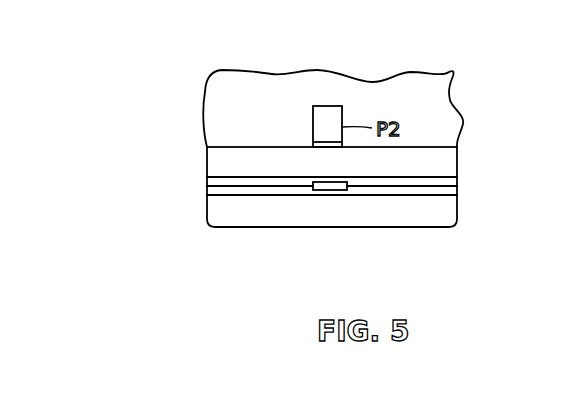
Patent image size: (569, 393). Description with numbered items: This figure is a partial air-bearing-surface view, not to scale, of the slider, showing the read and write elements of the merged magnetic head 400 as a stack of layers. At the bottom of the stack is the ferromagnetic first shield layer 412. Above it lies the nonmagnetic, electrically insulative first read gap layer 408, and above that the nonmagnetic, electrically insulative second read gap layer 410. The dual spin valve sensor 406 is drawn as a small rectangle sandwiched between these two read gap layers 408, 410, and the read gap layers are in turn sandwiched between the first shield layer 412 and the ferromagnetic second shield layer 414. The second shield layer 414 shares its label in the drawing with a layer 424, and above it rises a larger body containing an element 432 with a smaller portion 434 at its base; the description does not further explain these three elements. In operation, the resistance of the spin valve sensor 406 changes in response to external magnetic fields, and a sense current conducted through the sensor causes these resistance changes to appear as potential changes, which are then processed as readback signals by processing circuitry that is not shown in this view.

The merged magnetic head 400 is at (478, 83).
The second shield layer 414 is at (276, 162).
The P1 layer 424 is at (212, 160).
The second read gap layer 410 is at (425, 180).
The first read gap layer 408 is at (255, 195).
The first shield layer 412 is at (448, 212).
The dual spin valve sensor 406 is at (330, 194).
The P2 pillar 432 is at (333, 120).
The bottom portion of pillar 434 is at (330, 140).